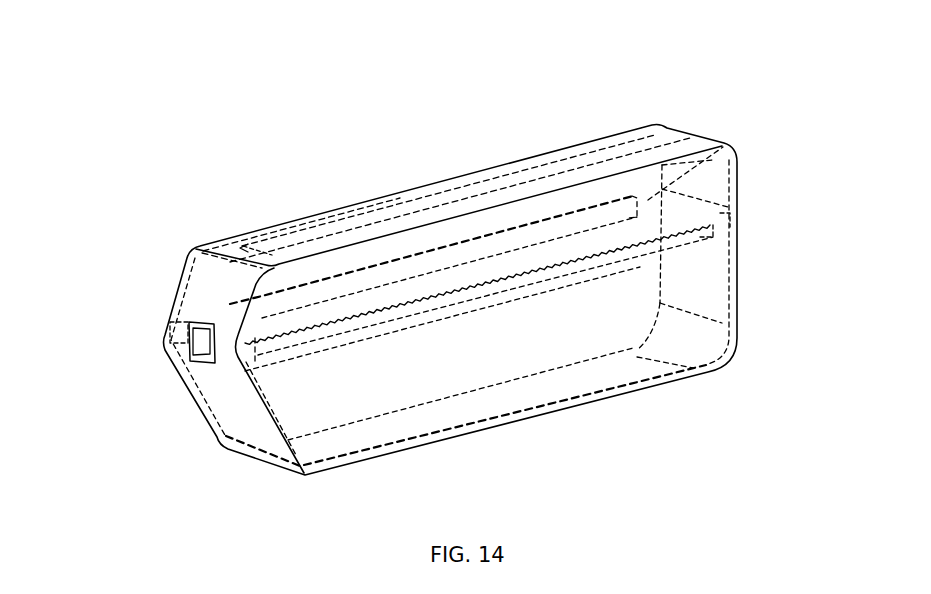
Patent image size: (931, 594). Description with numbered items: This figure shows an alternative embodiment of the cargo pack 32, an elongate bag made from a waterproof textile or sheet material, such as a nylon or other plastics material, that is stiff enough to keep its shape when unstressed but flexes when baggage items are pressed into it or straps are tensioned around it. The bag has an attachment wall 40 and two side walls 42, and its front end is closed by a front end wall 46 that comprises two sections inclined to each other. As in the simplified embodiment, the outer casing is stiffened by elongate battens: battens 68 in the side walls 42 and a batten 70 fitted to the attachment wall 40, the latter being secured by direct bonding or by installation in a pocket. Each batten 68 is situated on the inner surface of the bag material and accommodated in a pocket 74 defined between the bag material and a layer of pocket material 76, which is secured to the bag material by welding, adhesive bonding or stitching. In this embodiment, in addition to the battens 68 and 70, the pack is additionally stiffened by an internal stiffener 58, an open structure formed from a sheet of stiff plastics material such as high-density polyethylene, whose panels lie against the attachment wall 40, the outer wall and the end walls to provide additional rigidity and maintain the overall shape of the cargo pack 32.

The cargo pack 32 is at (257, 186).
The attachment wall 40 is at (550, 157).
The side wall 42 is at (469, 376).
The front end wall 46 is at (207, 407).
The stiffener 58 is at (207, 442).
The batten 68 is at (724, 147).
The batten 70 is at (338, 232).
The pocket 74 is at (733, 235).
The pocket material 76 is at (733, 207).